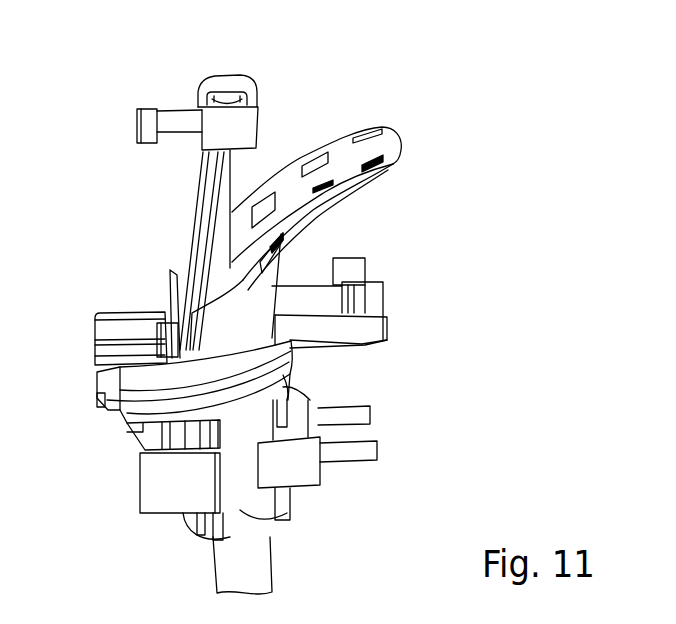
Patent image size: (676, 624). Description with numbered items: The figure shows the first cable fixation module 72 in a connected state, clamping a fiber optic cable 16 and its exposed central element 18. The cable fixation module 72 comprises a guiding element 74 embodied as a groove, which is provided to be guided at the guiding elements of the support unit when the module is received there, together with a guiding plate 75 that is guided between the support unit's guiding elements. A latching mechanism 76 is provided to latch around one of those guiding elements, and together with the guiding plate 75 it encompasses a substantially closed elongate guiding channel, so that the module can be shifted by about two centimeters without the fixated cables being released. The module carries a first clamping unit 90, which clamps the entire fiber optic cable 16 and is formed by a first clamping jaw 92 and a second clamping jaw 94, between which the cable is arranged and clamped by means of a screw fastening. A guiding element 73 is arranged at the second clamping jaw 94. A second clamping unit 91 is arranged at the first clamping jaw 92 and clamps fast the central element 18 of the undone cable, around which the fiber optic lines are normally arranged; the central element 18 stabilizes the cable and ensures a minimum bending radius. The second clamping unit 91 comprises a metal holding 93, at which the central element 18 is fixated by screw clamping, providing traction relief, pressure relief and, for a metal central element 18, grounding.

The fiber optic cable 16 is at (252, 580).
The central element 18 is at (232, 177).
The first cable fixation module 72 is at (465, 273).
The guiding element 73 is at (383, 147).
The guiding element 74 is at (117, 411).
The guiding plate 75 is at (383, 316).
The latching mechanism 76 is at (357, 268).
The first clamping unit 90 is at (386, 497).
The second clamping unit 91 is at (172, 66).
The first clamping jaw 92 is at (210, 540).
The metal holding 93 is at (206, 181).
The second clamping jaw 94 is at (263, 523).